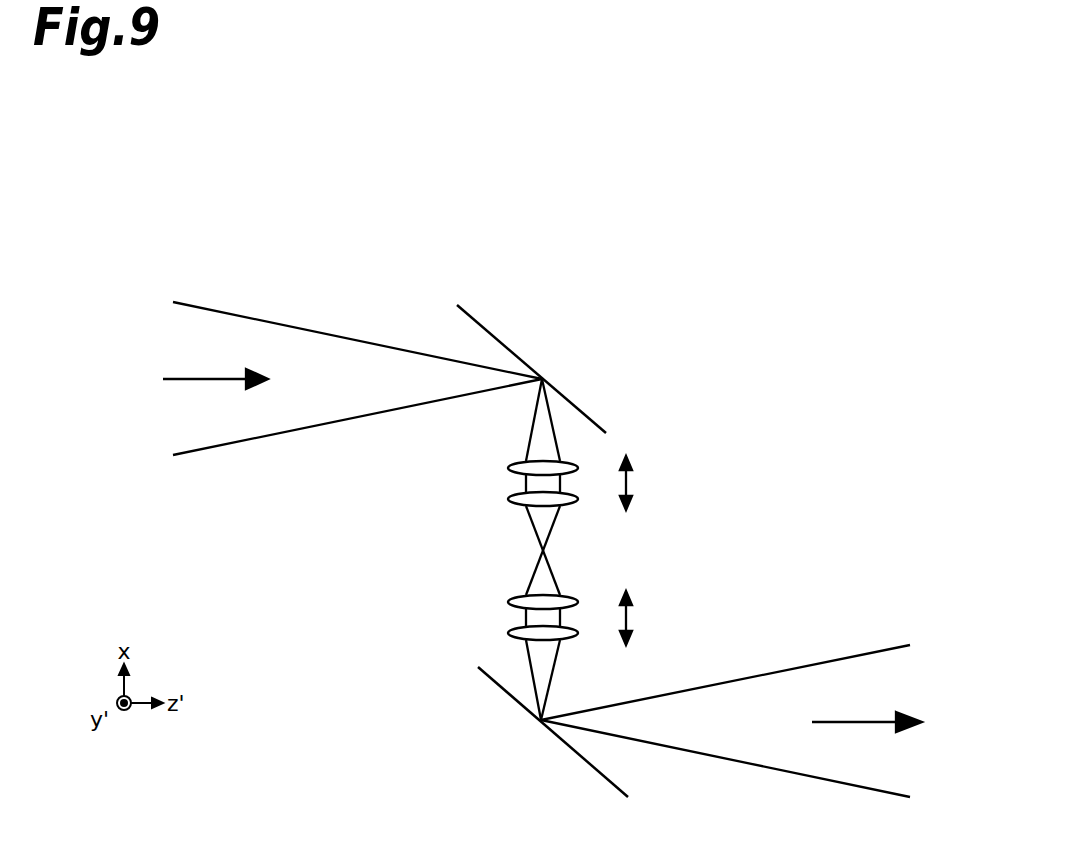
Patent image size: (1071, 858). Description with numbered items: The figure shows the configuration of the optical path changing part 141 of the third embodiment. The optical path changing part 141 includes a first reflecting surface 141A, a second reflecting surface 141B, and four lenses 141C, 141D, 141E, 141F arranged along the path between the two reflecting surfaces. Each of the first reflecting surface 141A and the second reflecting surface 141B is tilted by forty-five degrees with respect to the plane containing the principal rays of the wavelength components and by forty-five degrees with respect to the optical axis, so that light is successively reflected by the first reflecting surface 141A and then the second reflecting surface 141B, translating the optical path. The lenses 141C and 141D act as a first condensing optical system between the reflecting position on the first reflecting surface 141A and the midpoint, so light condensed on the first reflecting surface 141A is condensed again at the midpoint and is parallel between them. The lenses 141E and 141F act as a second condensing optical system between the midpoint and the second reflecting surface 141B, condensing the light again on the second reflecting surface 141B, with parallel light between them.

The optical path changing part 141 is at (603, 200).
The first reflecting surface 141A is at (590, 412).
The second reflecting surface 141B is at (497, 684).
The lens 141C is at (510, 468).
The lens 141D is at (510, 499).
The lens 141E is at (510, 602).
The lens 141F is at (510, 633).